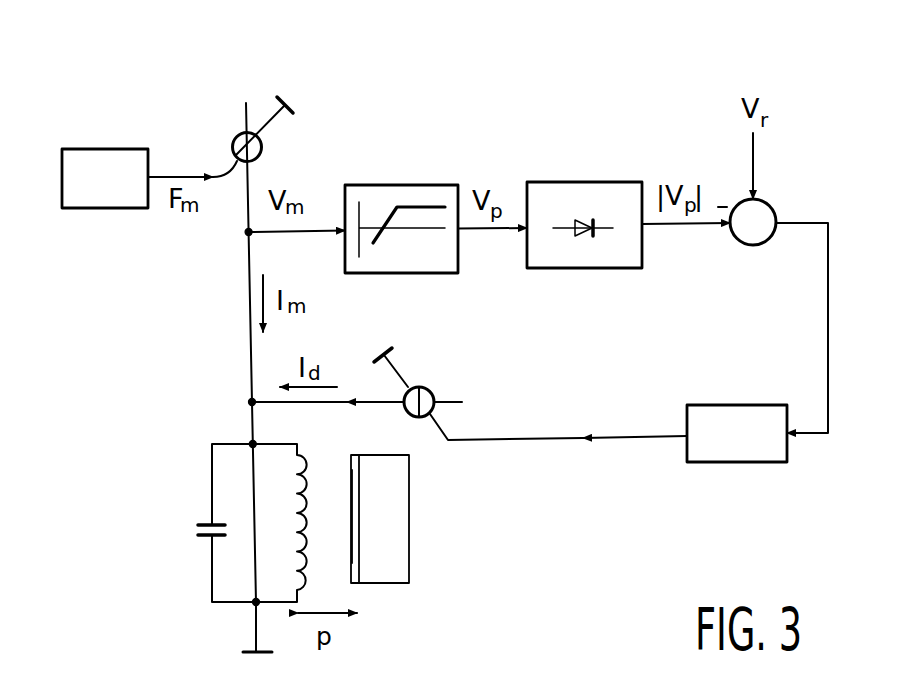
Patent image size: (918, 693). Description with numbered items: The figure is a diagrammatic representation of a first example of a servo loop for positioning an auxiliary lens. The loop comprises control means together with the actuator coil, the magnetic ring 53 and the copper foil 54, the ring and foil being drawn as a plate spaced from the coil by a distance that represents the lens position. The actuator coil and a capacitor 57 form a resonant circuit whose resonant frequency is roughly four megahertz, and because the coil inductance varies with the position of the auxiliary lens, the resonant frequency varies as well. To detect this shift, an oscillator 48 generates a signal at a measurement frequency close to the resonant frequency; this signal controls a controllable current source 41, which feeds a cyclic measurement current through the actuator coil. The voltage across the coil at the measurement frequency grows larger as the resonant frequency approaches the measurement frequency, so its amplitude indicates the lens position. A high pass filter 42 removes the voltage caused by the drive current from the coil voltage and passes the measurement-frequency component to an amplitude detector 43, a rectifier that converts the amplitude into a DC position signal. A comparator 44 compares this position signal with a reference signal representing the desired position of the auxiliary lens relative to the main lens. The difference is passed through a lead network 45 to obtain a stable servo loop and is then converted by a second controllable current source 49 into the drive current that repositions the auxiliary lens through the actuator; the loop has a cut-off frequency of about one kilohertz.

The oscillator 48 is at (93, 149).
The controllable current source 41 is at (233, 141).
The high pass filter 42 is at (398, 185).
The amplitude detector 43 is at (575, 183).
The comparator 44 is at (753, 246).
The lead network 45 is at (728, 405).
The controllable current source 49 is at (437, 388).
The magnetic ring 53 is at (400, 513).
The copper foil 54 is at (352, 563).
The capacitor 57 is at (198, 528).